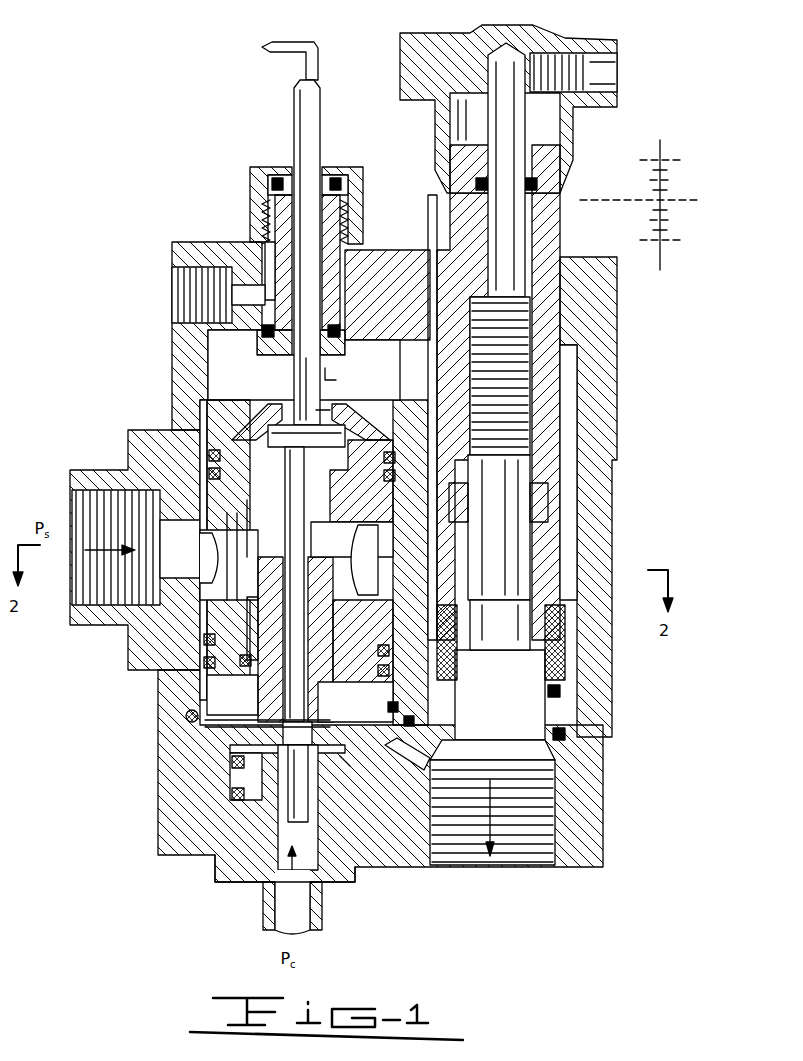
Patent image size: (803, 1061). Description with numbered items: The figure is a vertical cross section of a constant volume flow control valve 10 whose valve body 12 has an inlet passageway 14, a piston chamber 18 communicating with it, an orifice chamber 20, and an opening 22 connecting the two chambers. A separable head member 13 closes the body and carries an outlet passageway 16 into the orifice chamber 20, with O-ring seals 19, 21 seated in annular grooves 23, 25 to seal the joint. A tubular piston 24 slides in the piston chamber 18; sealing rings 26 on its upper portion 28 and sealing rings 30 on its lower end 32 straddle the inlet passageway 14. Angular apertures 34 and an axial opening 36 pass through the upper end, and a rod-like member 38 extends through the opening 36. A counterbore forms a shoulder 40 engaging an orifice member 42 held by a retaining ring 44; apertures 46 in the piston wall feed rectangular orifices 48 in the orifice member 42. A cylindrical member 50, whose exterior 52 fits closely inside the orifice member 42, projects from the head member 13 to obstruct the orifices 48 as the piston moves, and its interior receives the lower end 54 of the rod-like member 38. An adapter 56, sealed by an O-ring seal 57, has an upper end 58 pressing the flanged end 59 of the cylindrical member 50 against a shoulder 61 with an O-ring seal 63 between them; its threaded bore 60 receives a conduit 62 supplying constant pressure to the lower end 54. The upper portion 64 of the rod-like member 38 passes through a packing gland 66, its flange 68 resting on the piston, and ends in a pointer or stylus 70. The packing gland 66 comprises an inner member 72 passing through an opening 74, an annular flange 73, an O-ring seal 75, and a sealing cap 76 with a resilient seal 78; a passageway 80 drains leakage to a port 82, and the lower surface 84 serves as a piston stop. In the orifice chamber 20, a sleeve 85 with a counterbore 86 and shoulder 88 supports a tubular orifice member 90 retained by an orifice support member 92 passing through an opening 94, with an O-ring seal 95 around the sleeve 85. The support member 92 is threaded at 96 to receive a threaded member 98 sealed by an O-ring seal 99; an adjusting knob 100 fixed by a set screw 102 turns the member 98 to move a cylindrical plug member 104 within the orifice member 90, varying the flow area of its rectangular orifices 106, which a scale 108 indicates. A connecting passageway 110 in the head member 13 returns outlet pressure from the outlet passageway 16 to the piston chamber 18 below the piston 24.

The constant volume flow control valve 10 is at (348, 469).
The valve body 12 is at (180, 243).
The head member 13 is at (200, 822).
The inlet passageway 14 is at (100, 503).
The outlet passageway 16 is at (521, 858).
The piston chamber 18 is at (206, 388).
The O-ring seal 19 is at (187, 714).
The orifice chamber 20 is at (578, 378).
The O-ring seal 21 is at (567, 735).
The opening 22 is at (396, 366).
The annular groove 23 is at (393, 702).
The piston 24 is at (212, 452).
The annular groove 25 is at (410, 716).
The annular sealing rings 26 is at (208, 469).
The upper portion of piston 28 is at (267, 414).
The annular sealing rings 30 is at (204, 653).
The lower end of piston 32 is at (214, 676).
The apertures 34 is at (353, 430).
The opening 36 is at (316, 411).
The rod-like member 38 is at (298, 378).
The downwardly facing shoulder 40 is at (384, 472).
The orifice member 42 is at (344, 500).
The retaining ring 44 is at (376, 664).
The apertures 46 is at (228, 549).
The orifices 48 is at (360, 546).
The cylindrical member 50 is at (265, 721).
The exterior of cylindrical member 52 is at (270, 729).
The lower end of rod-like member 54 is at (300, 630).
The adapter 56 is at (240, 879).
The O-ring seal 57 is at (232, 762).
The upper end of adapter 58 is at (348, 762).
The lower flanged end 59 is at (232, 793).
The partially threaded bore 60 is at (300, 812).
The downwardly facing shoulder 61 is at (245, 752).
The threaded conduit 62 is at (311, 906).
The O-ring seal 63 is at (318, 751).
The upper portion of rod-like member 64 is at (316, 134).
The packing gland 66 is at (252, 181).
The enlarged flange 68 is at (322, 448).
The pointer or stylus 70 is at (286, 45).
The inner member 72 is at (338, 214).
The annular flange 73 is at (336, 350).
The opening 74 is at (351, 263).
The O-ring seal 75 is at (342, 328).
The sealing cap 76 is at (364, 170).
The resilient seal 78 is at (331, 176).
The passageway 80 is at (272, 223).
The port 82 is at (185, 294).
The lower surface of inner member 84 is at (341, 379).
The sleeve 85 is at (434, 641).
The counterbore 86 is at (556, 649).
The upwardly facing shoulder 88 is at (562, 673).
The tubular orifice member 90 is at (550, 506).
The orifice support member 92 is at (562, 406).
The opening 94 is at (548, 301).
The O-ring seal 95 is at (561, 690).
The threaded portion 96 is at (552, 333).
The threaded member 98 is at (506, 260).
The O-ring seal 99 is at (540, 185).
The adjusting knob 100 is at (566, 37).
The set screw 102 is at (588, 77).
The cylindrical plug member 104 is at (512, 479).
The elongated orifices 106 is at (538, 573).
The scale 108 is at (690, 193).
The connecting passageway 110 is at (421, 771).